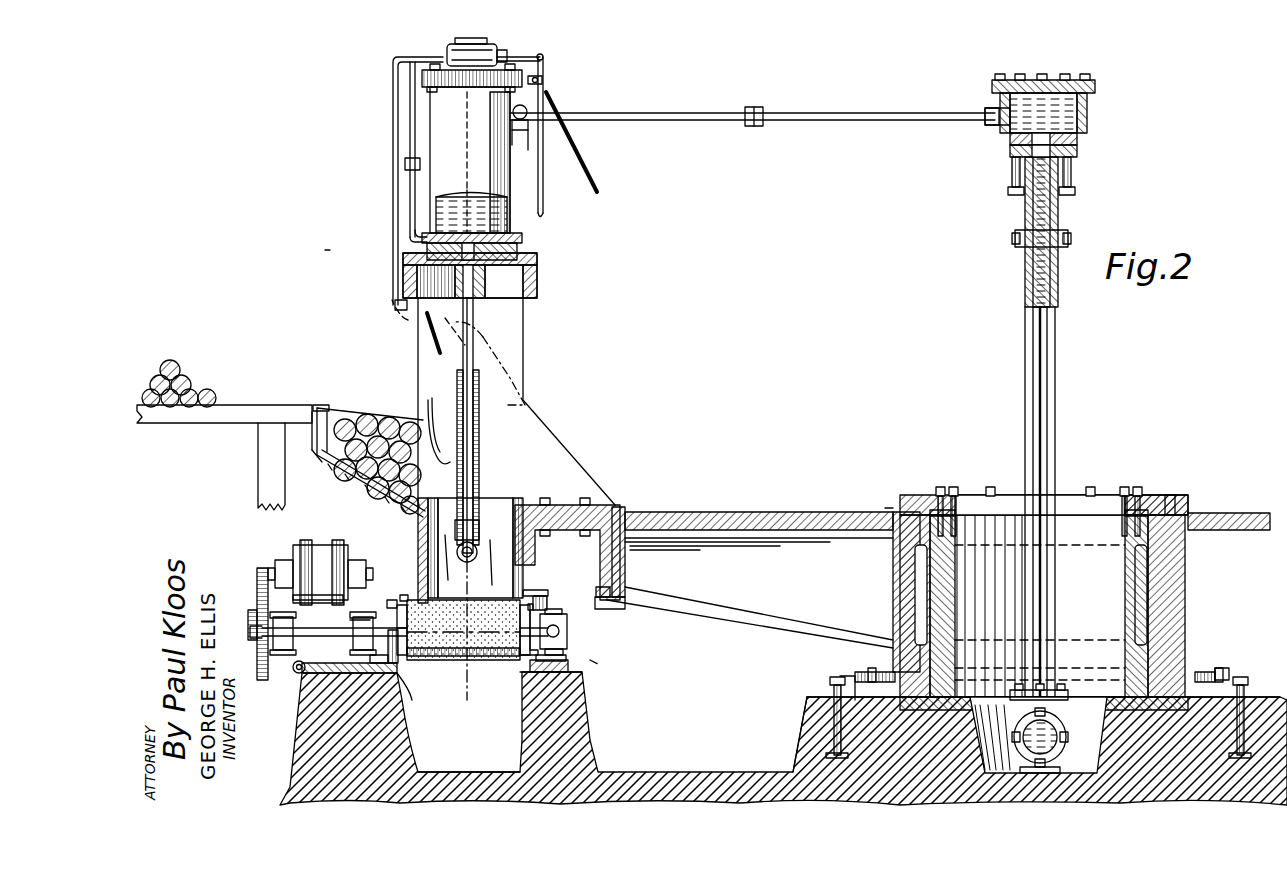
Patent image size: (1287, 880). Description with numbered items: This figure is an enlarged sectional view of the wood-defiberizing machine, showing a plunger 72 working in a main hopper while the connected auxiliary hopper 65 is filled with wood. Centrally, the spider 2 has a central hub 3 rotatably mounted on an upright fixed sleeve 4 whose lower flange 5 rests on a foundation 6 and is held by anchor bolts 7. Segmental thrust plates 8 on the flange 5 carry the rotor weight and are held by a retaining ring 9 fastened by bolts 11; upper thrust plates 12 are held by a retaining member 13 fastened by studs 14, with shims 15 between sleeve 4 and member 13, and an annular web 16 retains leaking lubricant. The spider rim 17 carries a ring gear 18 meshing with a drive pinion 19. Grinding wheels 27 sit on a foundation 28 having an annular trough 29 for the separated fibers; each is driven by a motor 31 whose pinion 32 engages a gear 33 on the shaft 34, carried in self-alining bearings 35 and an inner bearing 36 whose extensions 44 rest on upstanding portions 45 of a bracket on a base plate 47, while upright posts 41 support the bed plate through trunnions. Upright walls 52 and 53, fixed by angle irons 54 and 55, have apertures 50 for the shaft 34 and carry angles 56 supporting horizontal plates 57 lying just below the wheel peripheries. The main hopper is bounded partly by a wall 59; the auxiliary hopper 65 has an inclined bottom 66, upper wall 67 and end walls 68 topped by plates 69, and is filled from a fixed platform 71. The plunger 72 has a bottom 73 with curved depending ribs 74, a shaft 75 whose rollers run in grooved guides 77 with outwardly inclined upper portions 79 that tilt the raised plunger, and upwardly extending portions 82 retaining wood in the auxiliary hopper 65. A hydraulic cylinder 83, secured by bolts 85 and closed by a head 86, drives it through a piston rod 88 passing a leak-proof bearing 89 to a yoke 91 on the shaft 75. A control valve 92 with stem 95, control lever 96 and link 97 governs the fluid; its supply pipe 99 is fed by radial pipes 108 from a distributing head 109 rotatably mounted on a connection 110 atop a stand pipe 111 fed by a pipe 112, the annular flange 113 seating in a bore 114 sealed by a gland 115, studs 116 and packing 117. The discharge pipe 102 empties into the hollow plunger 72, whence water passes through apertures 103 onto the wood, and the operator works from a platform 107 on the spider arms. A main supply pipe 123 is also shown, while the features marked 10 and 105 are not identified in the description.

The spider 2 is at (735, 598).
The central hub 3 is at (1185, 600).
The upright fixed sleeve 4 is at (485, 215).
The lower flange 5 is at (390, 250).
The foundation 6 is at (370, 532).
The anchor bolts 7 is at (558, 600).
The segmental thrust plates 8 is at (323, 700).
The retaining ring 9 is at (866, 672).
The section line 10 is at (885, 508).
The bolts 11 is at (790, 648).
The thrust plates 12 is at (1180, 505).
The retaining member 13 is at (1165, 495).
The studs 14 is at (952, 486).
The shims 15 is at (932, 510).
The annular upstanding web 16 is at (1230, 668).
The channel-shaped rim or felly 17 is at (620, 507).
The ring gear 18 is at (612, 608).
The drive pinion 19 is at (622, 672).
The abrasive elements or grinding wheels 27 is at (440, 662).
The foundation 28 is at (302, 750).
The annular trough or channel 29 is at (420, 772).
The motor 31 is at (293, 552).
The drive pinion 32 is at (257, 575).
The gear 33 is at (250, 614).
The shaft 34 is at (300, 640).
The anti-friction self-alining bearings 35 is at (362, 650).
The inner bearing 36 is at (568, 632).
The upright posts 41 is at (323, 636).
The extensions 44 is at (568, 646).
The upstanding portions 45 is at (568, 655).
The base plate 47 is at (572, 665).
The apertures 50 is at (545, 606).
The upright plate or wall 52 is at (395, 660).
The upright plate or wall 53 is at (530, 650).
The angle iron 54 is at (404, 700).
The angle iron 55 is at (530, 672).
The angles 56 is at (540, 598).
The horizontally disposed plates 57 is at (535, 590).
The wall 59 is at (418, 540).
The auxiliary hopper 65 is at (353, 400).
The inclined bottom 66 is at (380, 493).
The upper wall 67 is at (315, 430).
The end walls 68 is at (316, 455).
The plates 69 is at (322, 404).
The fixed platform 71 is at (224, 405).
The ram or plunger 72 is at (525, 370).
The bottom 73 is at (495, 555).
The depending ribs 74 is at (500, 545).
The shaft 75 is at (472, 528).
The grooved guides 77 is at (478, 406).
The inclined upper portions 79 is at (452, 335).
The upwardly extending portions 82 is at (440, 410).
The cylinder 83 is at (436, 178).
The bolts 85 is at (428, 232).
The head 86 is at (465, 80).
The piston rod 88 is at (478, 450).
The leak-proof bearing 89 is at (480, 285).
The yoke 91 is at (472, 545).
The control valve 92 is at (440, 44).
The stem 95 is at (525, 56).
The control lever 96 is at (540, 203).
The link 97 is at (542, 78).
The supply pipe 99 is at (525, 130).
The discharge pipe 102 is at (393, 86).
The apertures 103 is at (448, 520).
The pipe 105 is at (410, 130).
The platform 107 is at (712, 512).
The radially disposed pipes 108 is at (748, 122).
The distributing head 109 is at (1053, 80).
The connection 110 is at (1060, 222).
The stand pipe 111 is at (1060, 350).
The pipe 112 is at (1062, 738).
The annular flange 113 is at (1080, 140).
The bore 114 is at (1080, 152).
The gland 115 is at (1072, 185).
The studs 116 is at (1076, 200).
The packing 117 is at (1012, 148).
The main supply pipe 123 is at (296, 672).